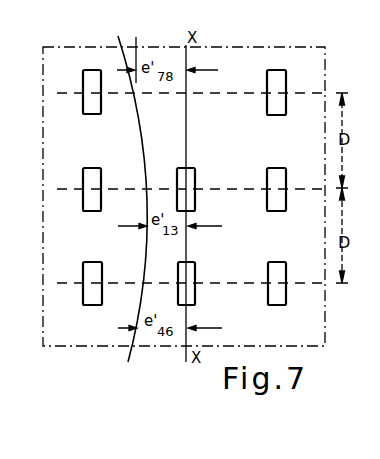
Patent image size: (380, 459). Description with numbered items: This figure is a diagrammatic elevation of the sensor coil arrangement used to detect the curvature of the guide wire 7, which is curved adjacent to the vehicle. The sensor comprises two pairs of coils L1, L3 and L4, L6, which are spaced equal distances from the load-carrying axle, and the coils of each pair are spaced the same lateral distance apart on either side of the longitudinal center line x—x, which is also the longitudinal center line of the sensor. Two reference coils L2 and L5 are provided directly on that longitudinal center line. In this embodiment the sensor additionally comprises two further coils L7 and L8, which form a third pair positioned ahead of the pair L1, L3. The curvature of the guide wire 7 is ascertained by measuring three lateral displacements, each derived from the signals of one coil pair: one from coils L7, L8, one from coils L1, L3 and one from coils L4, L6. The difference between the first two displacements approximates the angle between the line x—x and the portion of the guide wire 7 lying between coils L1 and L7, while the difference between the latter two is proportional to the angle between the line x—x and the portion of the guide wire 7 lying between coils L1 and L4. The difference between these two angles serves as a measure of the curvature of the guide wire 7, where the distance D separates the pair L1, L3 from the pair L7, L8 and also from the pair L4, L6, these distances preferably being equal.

The guide wire 7 is at (128, 355).
The coil L1 is at (90, 167).
The reference coil L2 is at (194, 167).
The coil L3 is at (277, 167).
The coil L4 is at (90, 264).
The reference coil L5 is at (193, 265).
The coil L6 is at (273, 266).
The coil L7 is at (89, 68).
The coil L8 is at (272, 68).